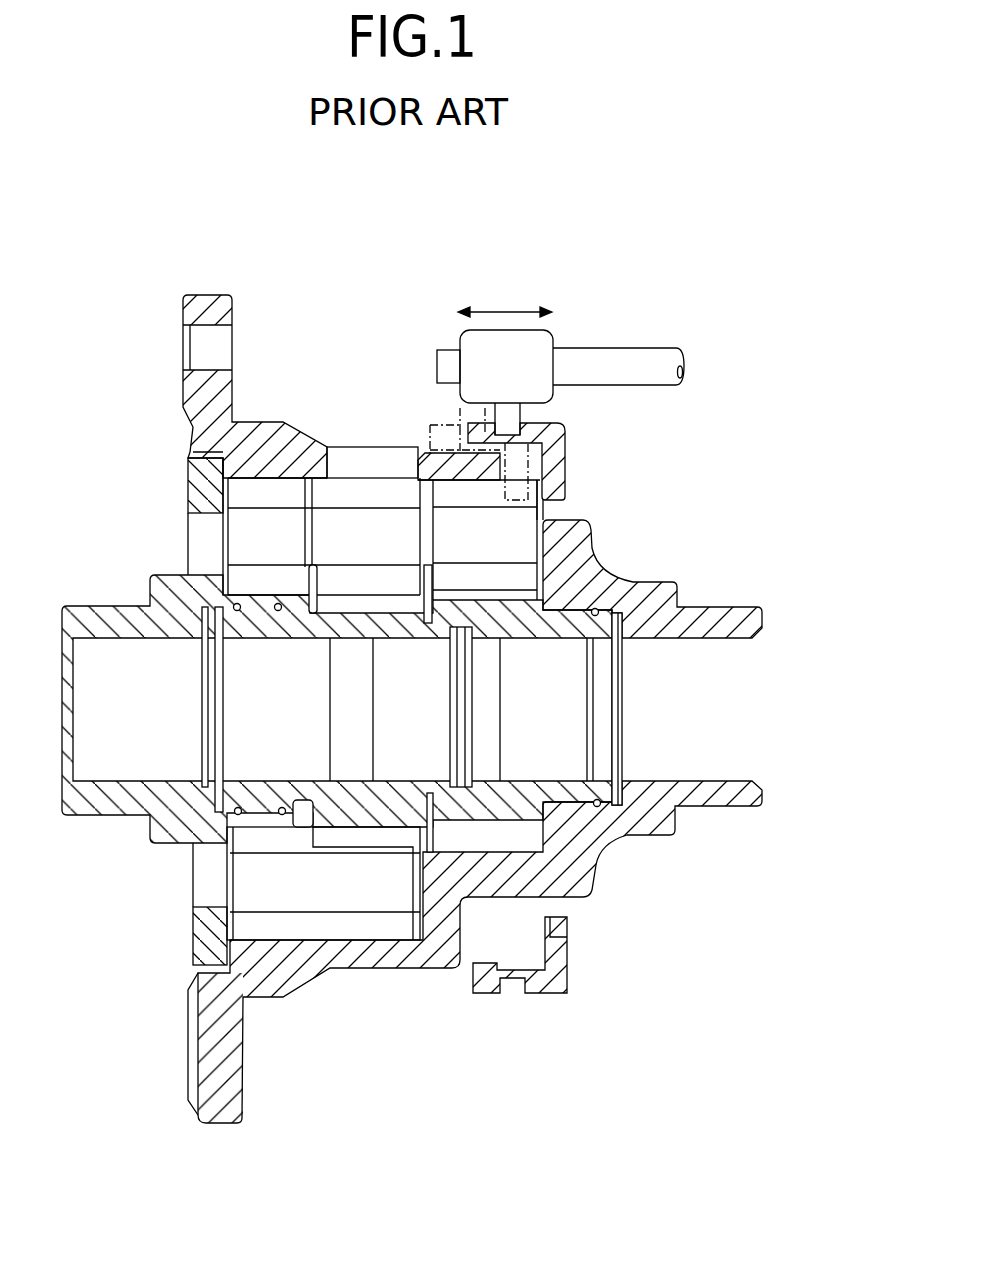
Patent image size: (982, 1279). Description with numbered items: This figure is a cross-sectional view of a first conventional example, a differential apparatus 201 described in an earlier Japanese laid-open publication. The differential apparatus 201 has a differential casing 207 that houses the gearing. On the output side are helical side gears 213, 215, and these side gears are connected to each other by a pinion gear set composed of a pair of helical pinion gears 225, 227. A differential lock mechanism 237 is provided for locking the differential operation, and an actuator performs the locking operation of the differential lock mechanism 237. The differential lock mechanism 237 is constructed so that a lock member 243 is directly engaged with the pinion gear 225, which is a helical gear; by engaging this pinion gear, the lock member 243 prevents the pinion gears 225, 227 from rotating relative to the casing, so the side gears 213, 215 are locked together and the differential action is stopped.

The differential apparatus 201 is at (736, 470).
The differential casing 207 is at (210, 293).
The helical side gear 213 is at (343, 578).
The helical side gear 215 is at (491, 840).
The helical pinion gear 225 is at (218, 494).
The helical pinion gear 227 is at (425, 942).
The differential lock mechanism 237 is at (582, 284).
The lock member 243 is at (567, 447).